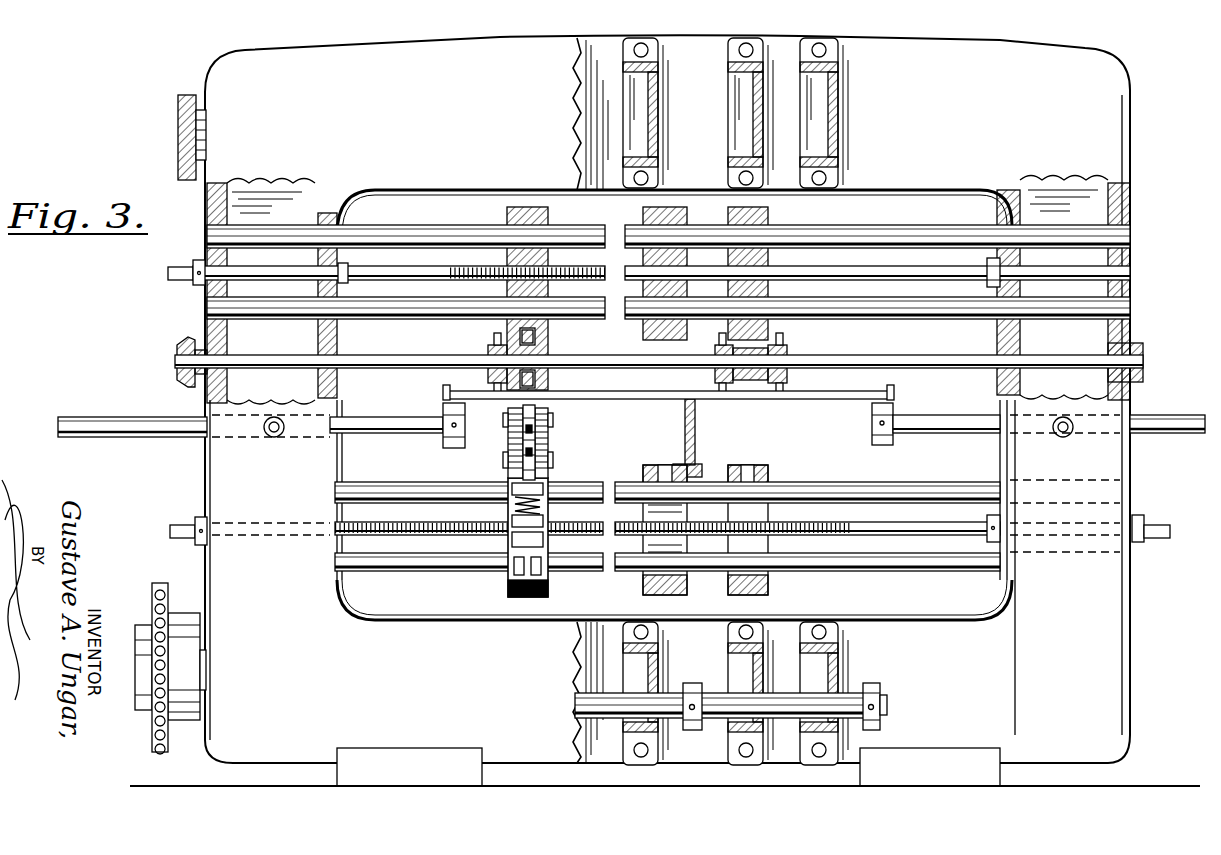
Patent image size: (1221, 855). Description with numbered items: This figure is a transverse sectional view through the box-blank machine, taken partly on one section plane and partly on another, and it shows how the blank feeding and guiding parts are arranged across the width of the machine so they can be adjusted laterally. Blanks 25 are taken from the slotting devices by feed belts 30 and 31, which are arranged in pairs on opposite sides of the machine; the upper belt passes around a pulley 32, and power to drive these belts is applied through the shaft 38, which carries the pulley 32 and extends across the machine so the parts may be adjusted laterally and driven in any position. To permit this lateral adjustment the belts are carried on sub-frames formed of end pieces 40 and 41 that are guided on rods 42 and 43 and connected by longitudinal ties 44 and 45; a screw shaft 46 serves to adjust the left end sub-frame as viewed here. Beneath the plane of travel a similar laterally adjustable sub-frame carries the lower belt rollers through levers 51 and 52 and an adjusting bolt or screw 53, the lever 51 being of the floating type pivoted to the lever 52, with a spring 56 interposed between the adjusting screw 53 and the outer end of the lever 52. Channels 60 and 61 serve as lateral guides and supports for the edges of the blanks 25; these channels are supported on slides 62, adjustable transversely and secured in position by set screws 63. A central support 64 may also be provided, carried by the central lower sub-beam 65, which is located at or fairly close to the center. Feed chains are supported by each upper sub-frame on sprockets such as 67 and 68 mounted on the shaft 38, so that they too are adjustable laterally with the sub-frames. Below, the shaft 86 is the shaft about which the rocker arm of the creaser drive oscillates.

The blanks 25 is at (820, 398).
The feed belt 30 is at (540, 338).
The feed belt 31 is at (540, 428).
The pulley 32 is at (545, 378).
The shaft 38 is at (405, 360).
The end piece 40 is at (667, 212).
The end piece 41 is at (523, 212).
The rod 42 is at (865, 235).
The rod 43 is at (403, 233).
The longitudinal tie 44 is at (680, 470).
The longitudinal tie 45 is at (655, 592).
The screw shaft 46 is at (178, 284).
The lever 51 is at (515, 441).
The lever 52 is at (545, 460).
The adjusting bolt or screw 53 is at (515, 576).
The spring 56 is at (515, 503).
The channel 60 is at (443, 393).
The channel 61 is at (894, 393).
The slide 62 is at (108, 422).
The set screw 63 is at (268, 437).
The central support 64 is at (695, 437).
The central lower sub-beam 65 is at (667, 535).
The sprocket 67 is at (494, 340).
The sprocket 68 is at (790, 340).
The shaft 86 is at (825, 700).